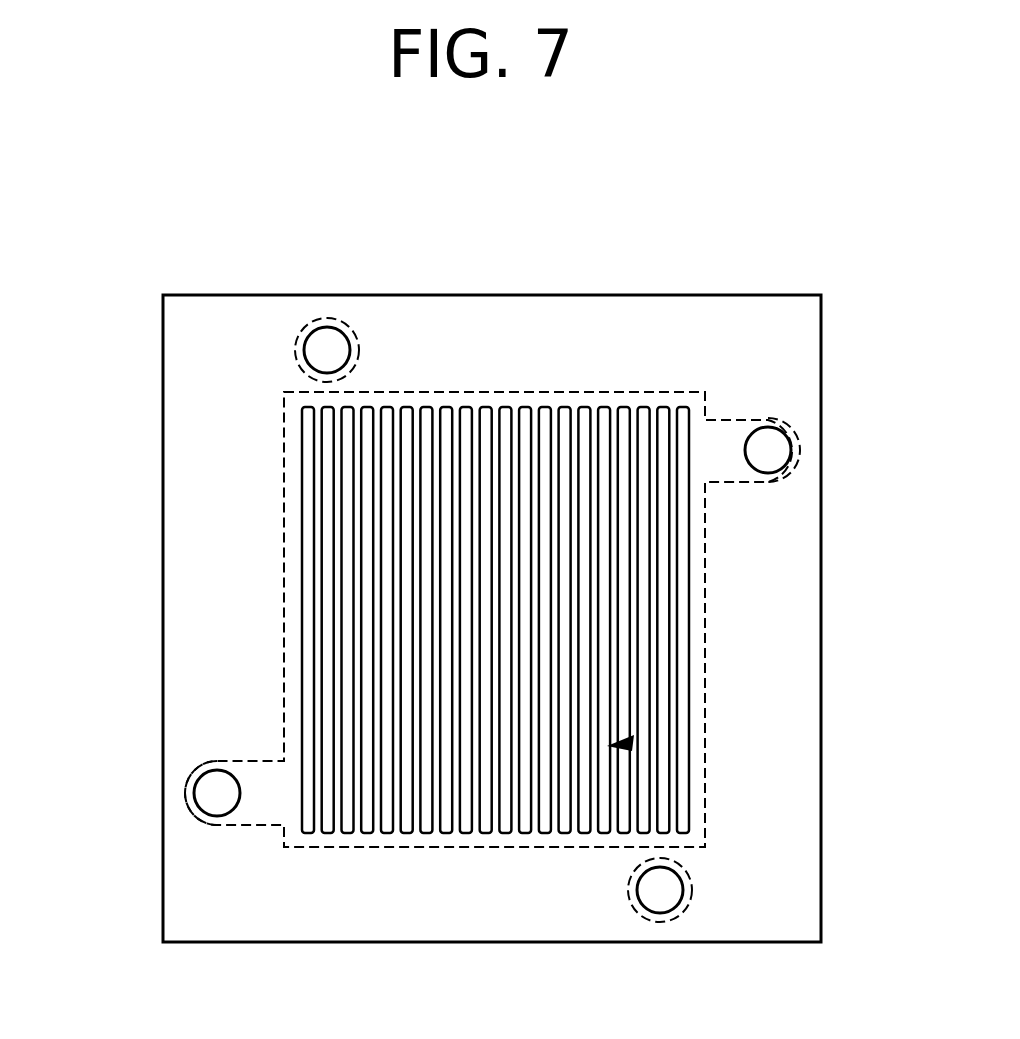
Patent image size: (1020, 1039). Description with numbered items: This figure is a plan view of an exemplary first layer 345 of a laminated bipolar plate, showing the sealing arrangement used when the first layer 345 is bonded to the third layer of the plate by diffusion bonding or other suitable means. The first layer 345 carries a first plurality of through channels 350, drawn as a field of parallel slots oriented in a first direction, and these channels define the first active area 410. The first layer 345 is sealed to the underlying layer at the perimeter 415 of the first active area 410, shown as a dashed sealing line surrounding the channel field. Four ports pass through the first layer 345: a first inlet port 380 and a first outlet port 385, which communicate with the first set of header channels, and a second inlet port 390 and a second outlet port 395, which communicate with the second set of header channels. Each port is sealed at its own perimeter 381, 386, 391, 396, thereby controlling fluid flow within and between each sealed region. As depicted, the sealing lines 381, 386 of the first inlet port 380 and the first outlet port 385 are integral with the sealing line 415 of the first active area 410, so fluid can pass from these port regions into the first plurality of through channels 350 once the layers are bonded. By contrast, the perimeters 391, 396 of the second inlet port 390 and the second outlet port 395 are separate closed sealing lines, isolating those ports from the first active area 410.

The first layer 345 is at (124, 222).
The first plurality of through channels 350 is at (689, 637).
The first inlet port 380 is at (200, 790).
The perimeter (sealing line) of first inlet port 381 is at (205, 826).
The first outlet port 385 is at (772, 438).
The perimeter (sealing line) of first outlet port 386 is at (748, 420).
The second inlet port 390 is at (650, 900).
The perimeter (sealing line) of second inlet port 391 is at (626, 890).
The second outlet port 395 is at (341, 345).
The perimeter (sealing line) of second outlet port 396 is at (298, 334).
The first active area 410 is at (630, 743).
The perimeter (sealing line) of first active area 415 is at (284, 578).